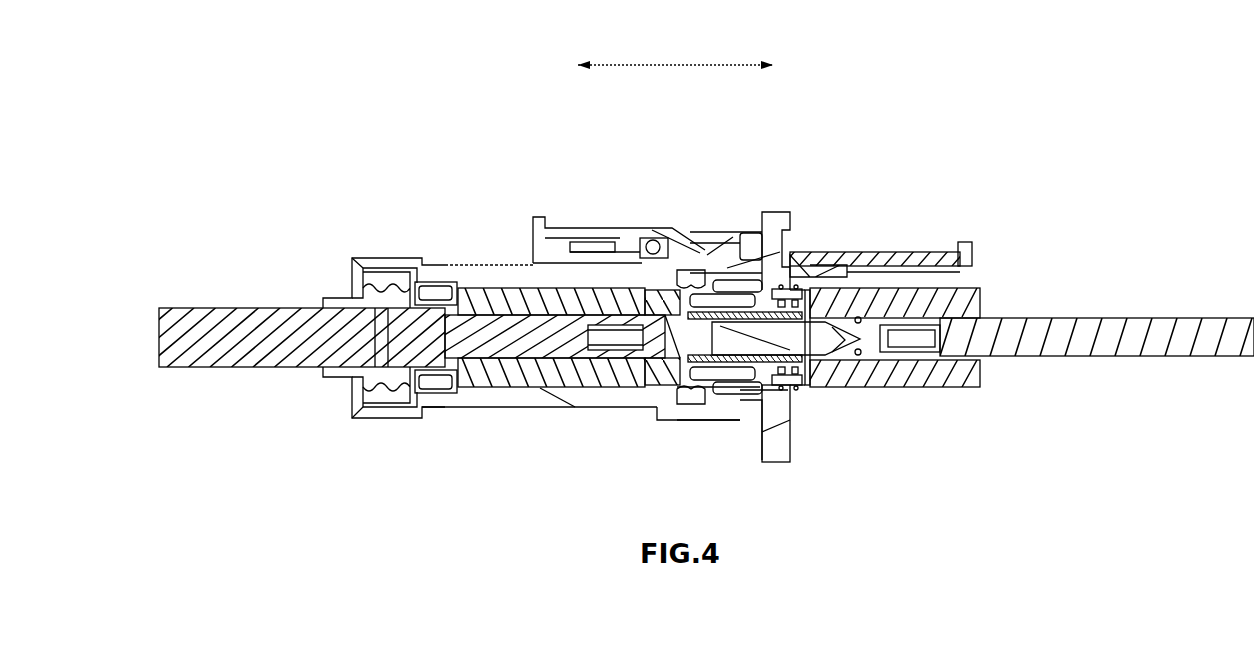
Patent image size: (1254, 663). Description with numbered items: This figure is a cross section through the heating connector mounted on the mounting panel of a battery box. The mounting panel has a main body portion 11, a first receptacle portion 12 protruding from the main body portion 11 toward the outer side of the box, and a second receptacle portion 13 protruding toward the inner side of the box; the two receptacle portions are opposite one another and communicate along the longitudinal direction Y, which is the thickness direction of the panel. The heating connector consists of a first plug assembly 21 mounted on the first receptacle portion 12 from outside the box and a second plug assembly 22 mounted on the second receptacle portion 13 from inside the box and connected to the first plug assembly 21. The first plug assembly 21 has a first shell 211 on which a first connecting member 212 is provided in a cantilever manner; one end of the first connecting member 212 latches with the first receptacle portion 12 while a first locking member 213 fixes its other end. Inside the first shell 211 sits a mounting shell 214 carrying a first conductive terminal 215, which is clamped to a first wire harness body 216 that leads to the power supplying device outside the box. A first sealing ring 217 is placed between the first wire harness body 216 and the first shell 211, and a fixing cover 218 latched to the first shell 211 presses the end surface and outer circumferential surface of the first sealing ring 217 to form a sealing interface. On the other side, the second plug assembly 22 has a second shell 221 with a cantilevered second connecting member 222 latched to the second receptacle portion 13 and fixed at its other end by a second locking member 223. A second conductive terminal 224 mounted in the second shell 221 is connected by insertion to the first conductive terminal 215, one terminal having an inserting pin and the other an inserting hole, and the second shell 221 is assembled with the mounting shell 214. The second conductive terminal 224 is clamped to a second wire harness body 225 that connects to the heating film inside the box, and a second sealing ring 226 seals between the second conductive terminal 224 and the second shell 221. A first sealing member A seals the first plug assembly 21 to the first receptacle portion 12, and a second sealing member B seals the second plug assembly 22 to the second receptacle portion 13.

The main body portion 11 is at (776, 212).
The first receptacle portion 12 is at (728, 270).
The second receptacle portion 13 is at (807, 278).
The first plug assembly 21 is at (510, 422).
The second plug assembly 22 is at (978, 408).
The first shell 211 is at (492, 277).
The first connecting member 212 is at (634, 240).
The first locking member 213 is at (562, 245).
The mounting shell 214 is at (585, 388).
The first conductive terminal 215 is at (657, 390).
The first wire harness body 216 is at (317, 333).
The first sealing ring 217 is at (397, 298).
The fixing cover 218 is at (362, 268).
The second shell 221 is at (925, 300).
The second connecting member 222 is at (887, 258).
The second locking member 223 is at (968, 266).
The second conductive terminal 224 is at (852, 385).
The second wire harness body 225 is at (1080, 333).
The second sealing ring 226 is at (903, 386).
The first sealing member A is at (715, 395).
The second sealing member B is at (803, 380).
The longitudinal direction Y is at (675, 49).